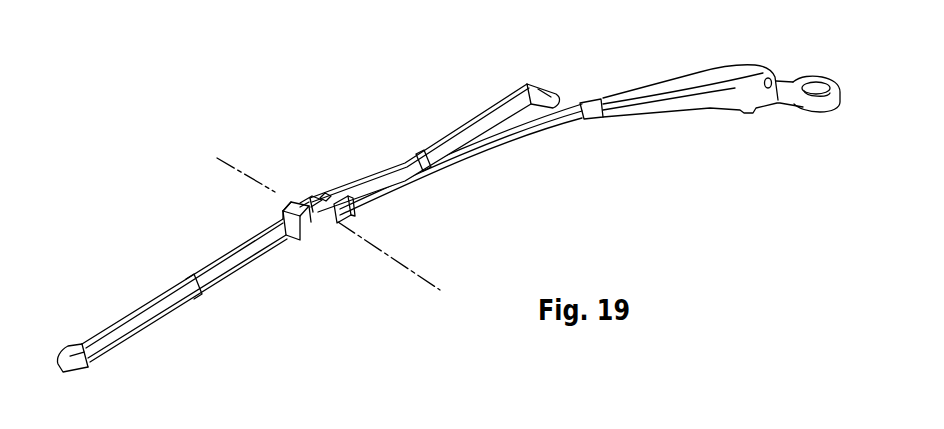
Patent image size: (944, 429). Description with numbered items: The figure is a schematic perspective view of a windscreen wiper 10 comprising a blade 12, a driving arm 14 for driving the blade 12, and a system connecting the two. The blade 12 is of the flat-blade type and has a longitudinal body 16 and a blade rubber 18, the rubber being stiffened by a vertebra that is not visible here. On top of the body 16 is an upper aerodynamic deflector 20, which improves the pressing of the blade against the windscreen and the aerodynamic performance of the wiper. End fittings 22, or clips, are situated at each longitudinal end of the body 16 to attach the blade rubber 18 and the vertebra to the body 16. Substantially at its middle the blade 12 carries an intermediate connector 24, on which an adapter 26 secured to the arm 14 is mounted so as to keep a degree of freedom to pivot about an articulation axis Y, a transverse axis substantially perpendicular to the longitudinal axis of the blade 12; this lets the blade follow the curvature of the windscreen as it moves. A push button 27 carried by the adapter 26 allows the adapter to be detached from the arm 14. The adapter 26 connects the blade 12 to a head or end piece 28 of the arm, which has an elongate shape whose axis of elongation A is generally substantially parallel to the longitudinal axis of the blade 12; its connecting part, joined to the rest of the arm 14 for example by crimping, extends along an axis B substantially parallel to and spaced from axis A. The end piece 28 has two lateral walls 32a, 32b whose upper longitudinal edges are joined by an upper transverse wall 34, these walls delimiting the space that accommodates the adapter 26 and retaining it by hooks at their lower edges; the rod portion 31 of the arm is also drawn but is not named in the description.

The windscreen wiper 10 is at (347, 122).
The blade 12 is at (117, 317).
The driving arm 14 is at (571, 128).
The longitudinal body 16 is at (166, 302).
The blade rubber 18 is at (160, 322).
The upper aerodynamic deflector 20 is at (222, 270).
The end fittings 22 is at (68, 345).
The intermediate connector 24 is at (322, 232).
The adapter 26 is at (285, 238).
The push button 27 is at (326, 190).
The end piece 28 is at (307, 204).
The arm rod 31 is at (391, 192).
The lateral wall 32a is at (342, 222).
The lateral wall 32b is at (291, 201).
The upper transverse wall 34 is at (312, 205).
The axis of elongation A is at (367, 176).
The axis B is at (425, 172).
The articulation axis Y is at (398, 266).